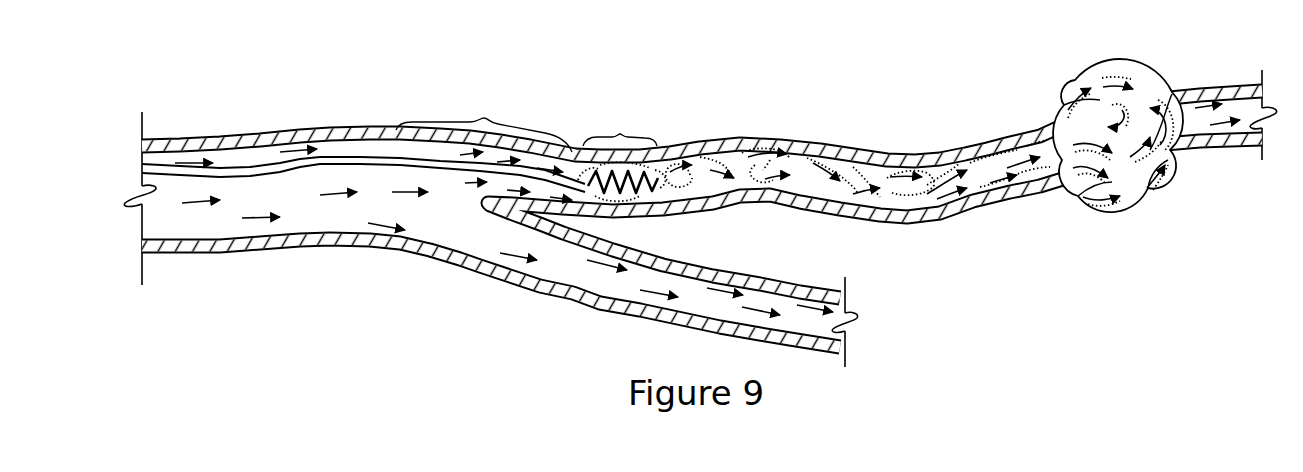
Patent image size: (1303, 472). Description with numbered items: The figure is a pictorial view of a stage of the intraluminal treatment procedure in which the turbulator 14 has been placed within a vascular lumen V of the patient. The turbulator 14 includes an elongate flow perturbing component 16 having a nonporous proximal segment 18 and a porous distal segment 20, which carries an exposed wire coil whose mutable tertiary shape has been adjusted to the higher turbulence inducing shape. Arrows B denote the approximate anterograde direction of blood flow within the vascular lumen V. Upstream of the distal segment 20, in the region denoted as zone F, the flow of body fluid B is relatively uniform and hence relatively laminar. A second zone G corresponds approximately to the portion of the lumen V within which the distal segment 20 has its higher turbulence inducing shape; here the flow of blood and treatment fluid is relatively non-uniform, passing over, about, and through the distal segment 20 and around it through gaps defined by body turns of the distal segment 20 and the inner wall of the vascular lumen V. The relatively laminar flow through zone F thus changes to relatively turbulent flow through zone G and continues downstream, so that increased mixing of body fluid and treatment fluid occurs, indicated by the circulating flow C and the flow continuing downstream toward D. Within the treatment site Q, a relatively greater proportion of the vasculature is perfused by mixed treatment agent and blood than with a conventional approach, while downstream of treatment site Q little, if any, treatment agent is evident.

The turbulator 14 is at (302, 174).
The elongate flow perturbing component 16 is at (260, 168).
The nonporous proximal segment 18 is at (437, 164).
The porous distal segment 20 is at (641, 205).
The vascular lumen V is at (224, 247).
The zone F is at (484, 126).
The zone G is at (621, 158).
The body fluid flow B is at (470, 183).
The flow eddies / circulation C is at (702, 200).
The distal vessel D is at (1246, 104).
The treatment site Q is at (1117, 206).